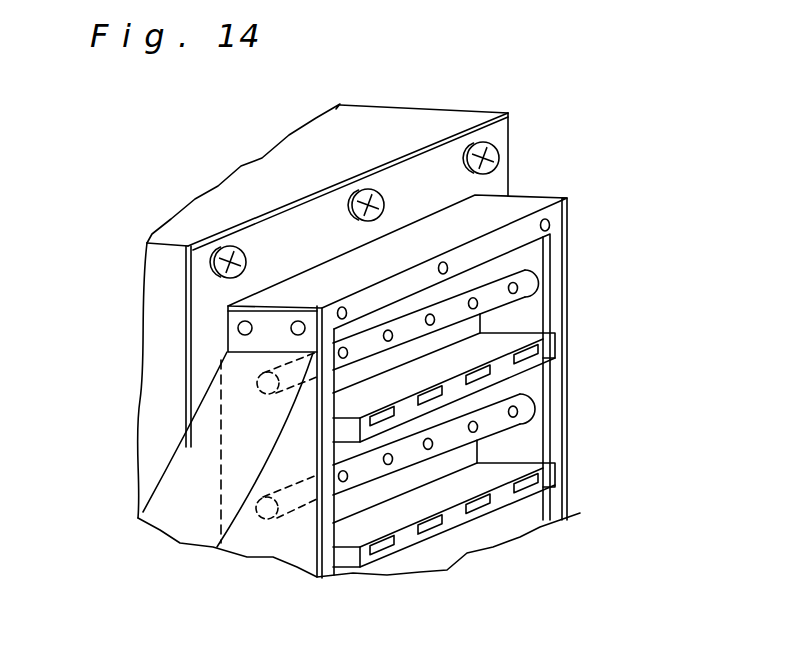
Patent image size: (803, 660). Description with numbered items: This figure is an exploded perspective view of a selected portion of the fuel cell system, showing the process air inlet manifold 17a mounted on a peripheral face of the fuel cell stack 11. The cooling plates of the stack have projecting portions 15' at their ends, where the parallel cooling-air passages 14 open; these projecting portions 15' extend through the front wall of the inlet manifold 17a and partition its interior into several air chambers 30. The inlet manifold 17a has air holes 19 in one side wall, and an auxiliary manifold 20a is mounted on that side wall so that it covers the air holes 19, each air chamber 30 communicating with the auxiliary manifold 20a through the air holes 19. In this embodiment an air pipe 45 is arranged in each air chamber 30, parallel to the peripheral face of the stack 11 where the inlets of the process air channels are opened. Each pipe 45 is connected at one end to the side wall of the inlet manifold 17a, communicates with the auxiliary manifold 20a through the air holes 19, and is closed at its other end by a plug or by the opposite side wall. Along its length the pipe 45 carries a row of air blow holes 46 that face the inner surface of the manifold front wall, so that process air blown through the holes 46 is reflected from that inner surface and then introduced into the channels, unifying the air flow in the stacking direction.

The fuel cell stack 11 is at (405, 132).
The process air inlet manifold 17a is at (522, 208).
The cooling-air passages 14 is at (555, 363).
The projecting portions 15' is at (527, 424).
The air pipe 45 is at (505, 303).
The air blow holes 46 is at (527, 262).
The air holes 19 is at (258, 380).
The air chamber 30 is at (340, 386).
The auxiliary manifold 20a is at (238, 503).